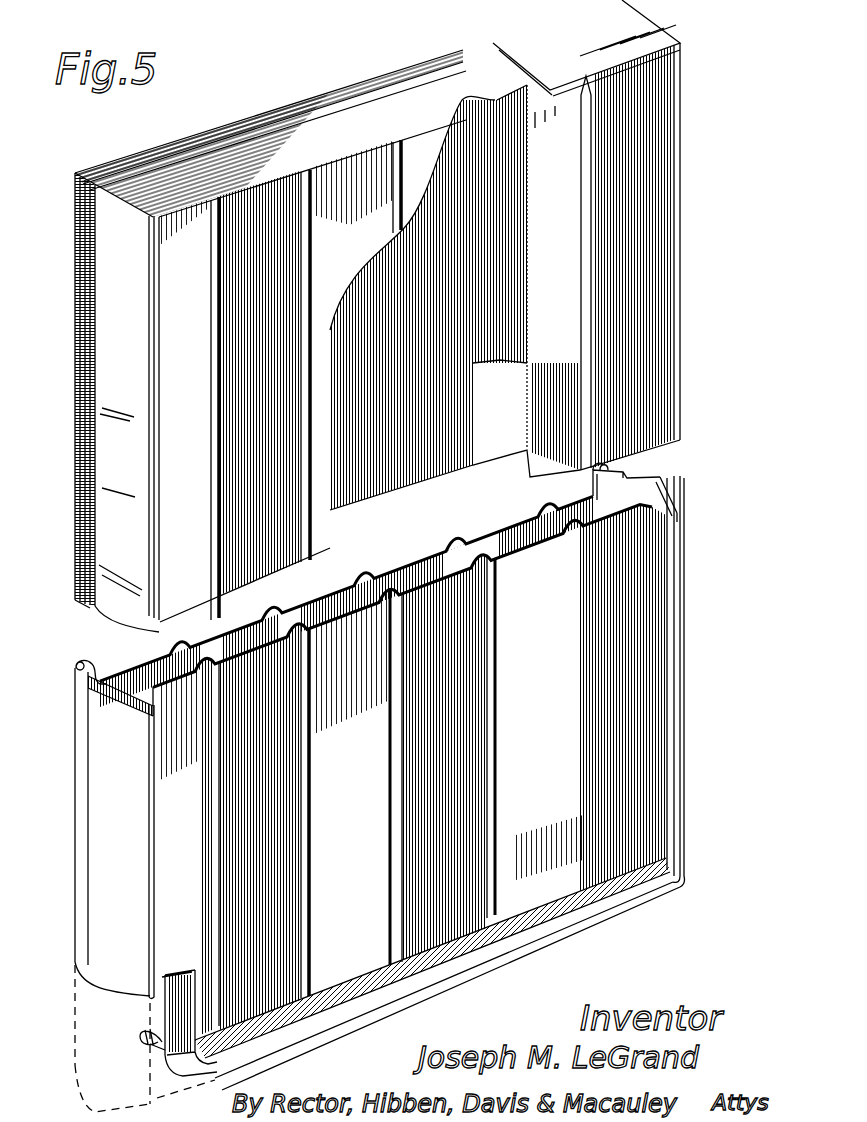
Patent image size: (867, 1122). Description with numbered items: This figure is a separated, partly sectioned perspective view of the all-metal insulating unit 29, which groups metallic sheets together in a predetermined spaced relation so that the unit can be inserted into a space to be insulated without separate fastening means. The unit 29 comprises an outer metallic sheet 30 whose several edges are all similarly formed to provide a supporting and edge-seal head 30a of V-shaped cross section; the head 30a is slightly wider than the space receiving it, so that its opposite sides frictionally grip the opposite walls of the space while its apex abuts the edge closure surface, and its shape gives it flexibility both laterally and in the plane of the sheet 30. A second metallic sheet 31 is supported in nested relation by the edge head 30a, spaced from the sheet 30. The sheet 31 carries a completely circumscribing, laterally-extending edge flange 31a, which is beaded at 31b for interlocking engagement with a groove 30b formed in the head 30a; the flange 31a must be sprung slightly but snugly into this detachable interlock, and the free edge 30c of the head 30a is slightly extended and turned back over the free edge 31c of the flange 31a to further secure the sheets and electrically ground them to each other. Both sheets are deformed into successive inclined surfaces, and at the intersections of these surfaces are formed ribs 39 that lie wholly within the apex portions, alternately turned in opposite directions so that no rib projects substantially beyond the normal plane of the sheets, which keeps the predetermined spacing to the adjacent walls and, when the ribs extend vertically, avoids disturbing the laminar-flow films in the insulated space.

The insulating unit 29 is at (262, 108).
The outer metallic sheet 30 is at (332, 600).
The supporting and edge-seal head 30a is at (623, 47).
The groove 30b is at (636, 476).
The free edge of sheet head 30c is at (140, 1036).
The second metallic sheet 31 is at (474, 464).
The edge flange 31a is at (130, 660).
The bead 31b is at (596, 484).
The free edge of sheet edge flange 31c is at (148, 1048).
The ribs 39 is at (215, 332).